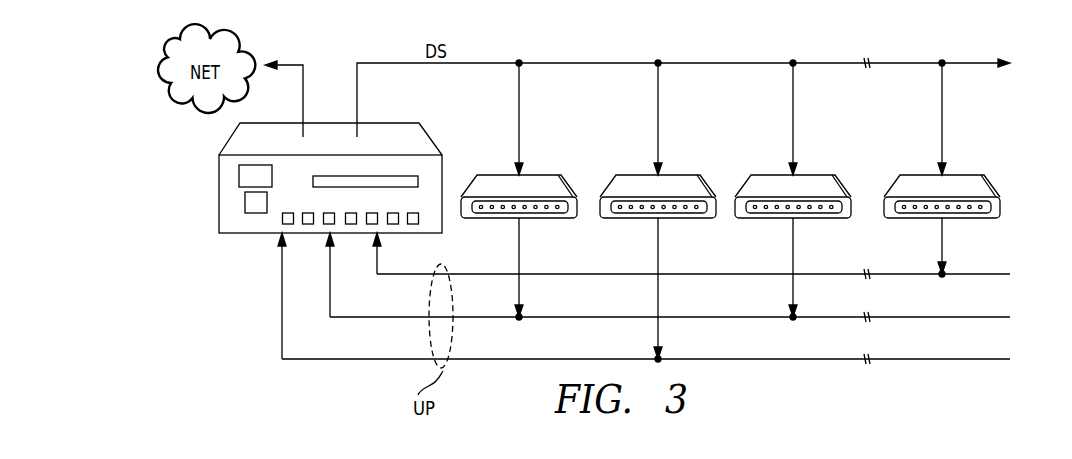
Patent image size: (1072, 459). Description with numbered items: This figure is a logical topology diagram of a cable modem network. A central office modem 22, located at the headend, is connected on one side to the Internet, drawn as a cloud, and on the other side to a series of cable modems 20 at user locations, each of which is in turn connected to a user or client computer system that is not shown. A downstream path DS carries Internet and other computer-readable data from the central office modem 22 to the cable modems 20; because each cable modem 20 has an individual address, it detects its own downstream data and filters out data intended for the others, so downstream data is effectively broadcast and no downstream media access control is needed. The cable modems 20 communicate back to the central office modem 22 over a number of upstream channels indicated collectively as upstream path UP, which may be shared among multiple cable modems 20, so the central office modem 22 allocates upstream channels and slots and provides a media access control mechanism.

The central office modem 22 is at (219, 191).
The cable modem 20 is at (730, 211).